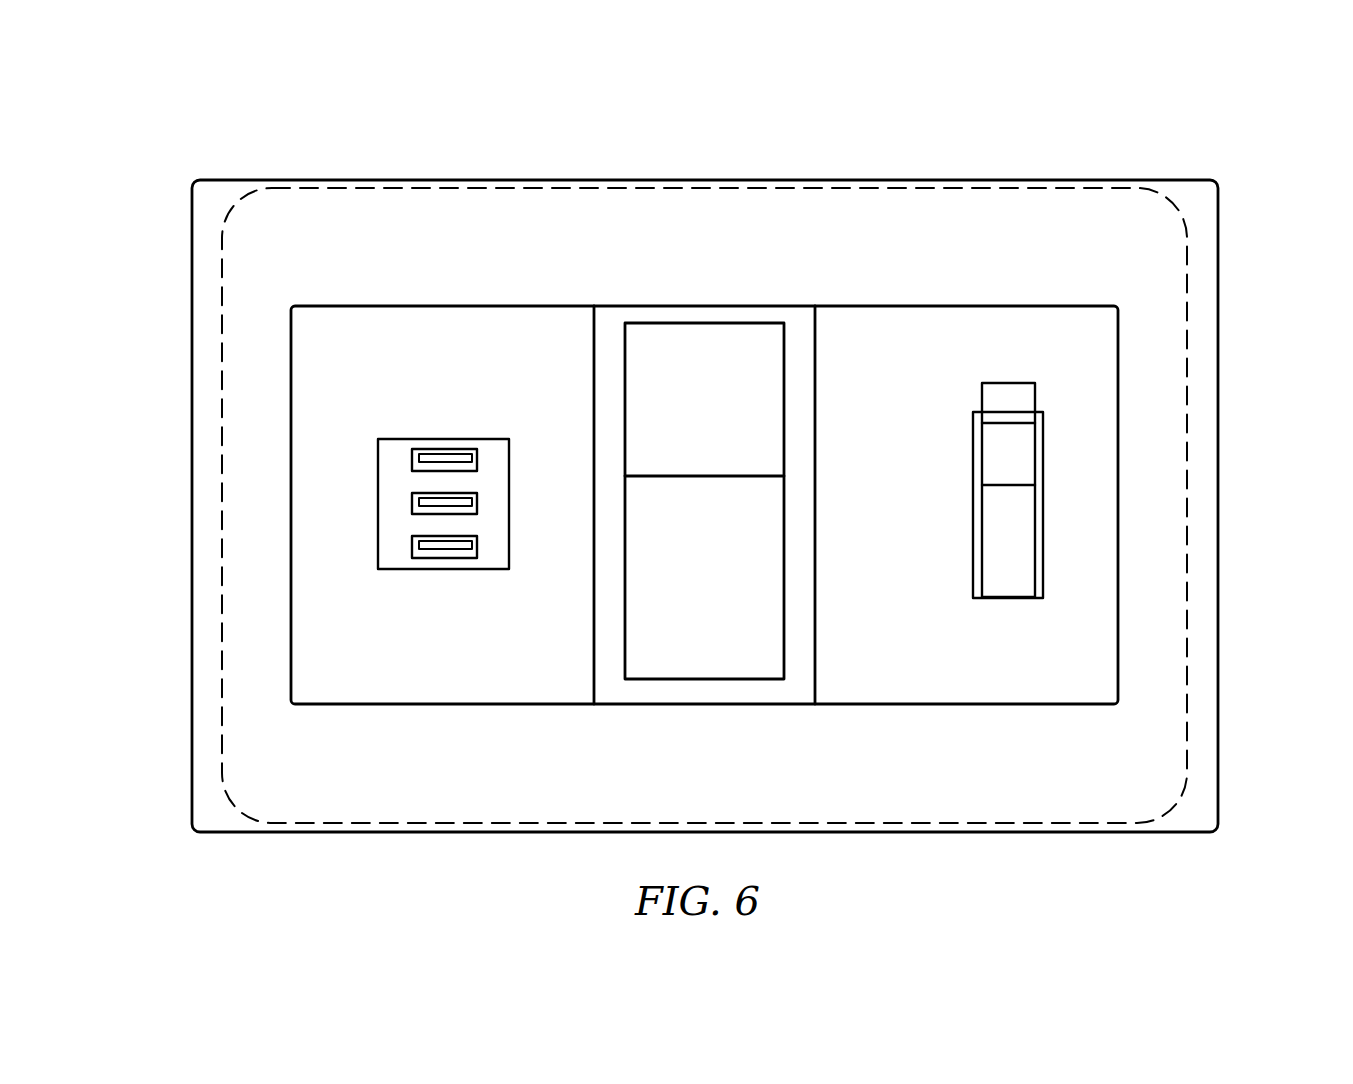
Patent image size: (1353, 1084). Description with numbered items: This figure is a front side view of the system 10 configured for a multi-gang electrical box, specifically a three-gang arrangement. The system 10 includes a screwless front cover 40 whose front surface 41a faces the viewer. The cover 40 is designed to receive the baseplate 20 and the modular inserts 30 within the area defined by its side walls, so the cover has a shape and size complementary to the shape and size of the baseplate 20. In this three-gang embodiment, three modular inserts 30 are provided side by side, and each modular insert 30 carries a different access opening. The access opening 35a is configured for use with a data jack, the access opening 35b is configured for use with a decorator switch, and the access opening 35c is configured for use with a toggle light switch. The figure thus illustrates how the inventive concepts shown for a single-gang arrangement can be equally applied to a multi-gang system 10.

The system 10 is at (162, 168).
The screwless front cover 40 is at (192, 312).
The baseplate 20 is at (1187, 306).
The front surface 41a is at (747, 235).
The modular insert 30 is at (495, 672).
The access opening 35a is at (438, 550).
The access opening 35b is at (645, 372).
The access opening 35c is at (1008, 537).